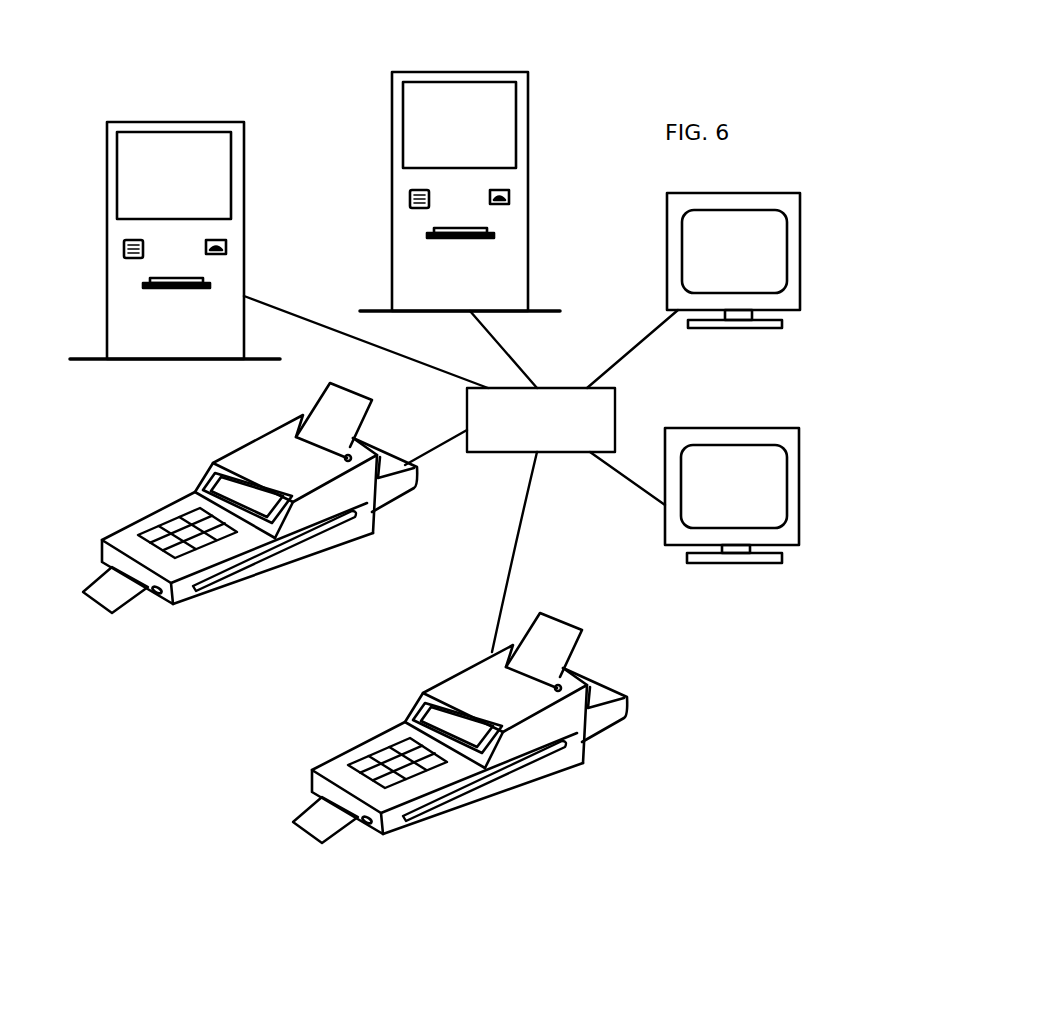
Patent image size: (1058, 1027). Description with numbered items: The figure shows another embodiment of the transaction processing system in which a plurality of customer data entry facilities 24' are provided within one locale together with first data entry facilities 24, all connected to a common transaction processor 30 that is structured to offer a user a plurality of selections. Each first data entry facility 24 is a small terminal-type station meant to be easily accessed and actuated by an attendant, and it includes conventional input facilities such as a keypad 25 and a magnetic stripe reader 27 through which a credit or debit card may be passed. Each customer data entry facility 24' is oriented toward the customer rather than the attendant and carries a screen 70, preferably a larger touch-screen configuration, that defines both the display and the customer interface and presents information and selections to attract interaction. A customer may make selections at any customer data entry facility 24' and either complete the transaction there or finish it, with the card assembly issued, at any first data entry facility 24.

The customer data entry facility 24' is at (491, 291).
The screen 70 is at (452, 305).
The transaction processor 30 is at (133, 626).
The first data entry facility 24 is at (364, 627).
The keypad 25 is at (162, 523).
The magnetic stripe reader 27 is at (347, 518).